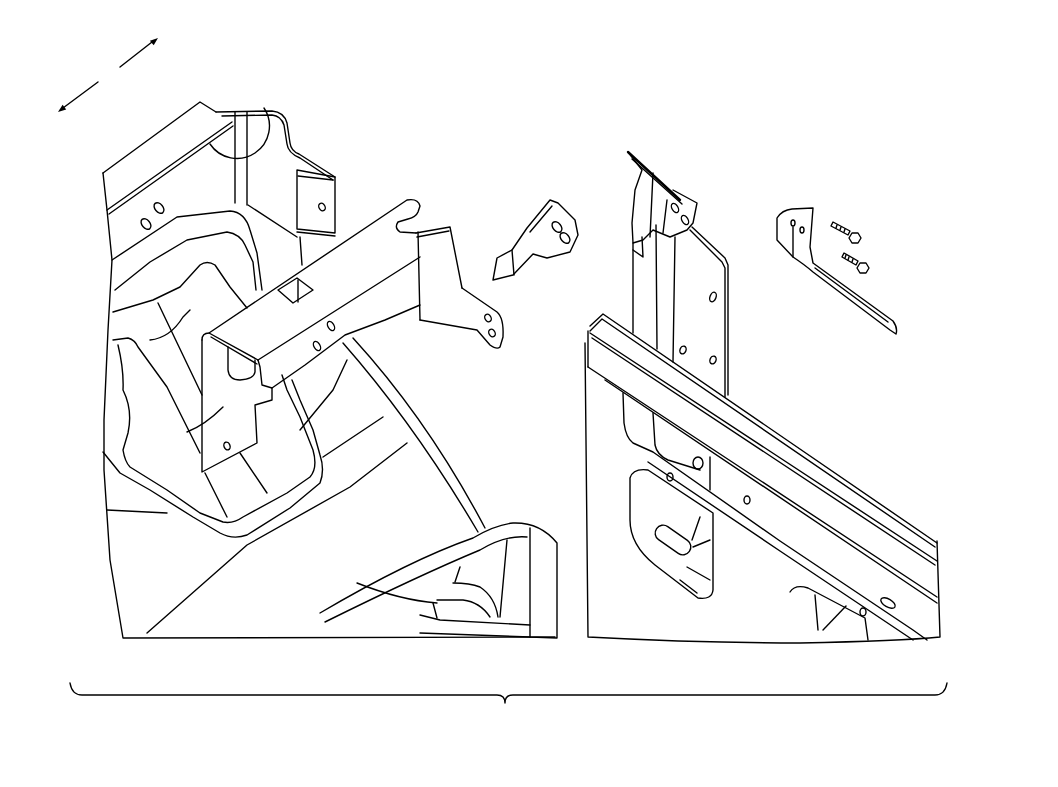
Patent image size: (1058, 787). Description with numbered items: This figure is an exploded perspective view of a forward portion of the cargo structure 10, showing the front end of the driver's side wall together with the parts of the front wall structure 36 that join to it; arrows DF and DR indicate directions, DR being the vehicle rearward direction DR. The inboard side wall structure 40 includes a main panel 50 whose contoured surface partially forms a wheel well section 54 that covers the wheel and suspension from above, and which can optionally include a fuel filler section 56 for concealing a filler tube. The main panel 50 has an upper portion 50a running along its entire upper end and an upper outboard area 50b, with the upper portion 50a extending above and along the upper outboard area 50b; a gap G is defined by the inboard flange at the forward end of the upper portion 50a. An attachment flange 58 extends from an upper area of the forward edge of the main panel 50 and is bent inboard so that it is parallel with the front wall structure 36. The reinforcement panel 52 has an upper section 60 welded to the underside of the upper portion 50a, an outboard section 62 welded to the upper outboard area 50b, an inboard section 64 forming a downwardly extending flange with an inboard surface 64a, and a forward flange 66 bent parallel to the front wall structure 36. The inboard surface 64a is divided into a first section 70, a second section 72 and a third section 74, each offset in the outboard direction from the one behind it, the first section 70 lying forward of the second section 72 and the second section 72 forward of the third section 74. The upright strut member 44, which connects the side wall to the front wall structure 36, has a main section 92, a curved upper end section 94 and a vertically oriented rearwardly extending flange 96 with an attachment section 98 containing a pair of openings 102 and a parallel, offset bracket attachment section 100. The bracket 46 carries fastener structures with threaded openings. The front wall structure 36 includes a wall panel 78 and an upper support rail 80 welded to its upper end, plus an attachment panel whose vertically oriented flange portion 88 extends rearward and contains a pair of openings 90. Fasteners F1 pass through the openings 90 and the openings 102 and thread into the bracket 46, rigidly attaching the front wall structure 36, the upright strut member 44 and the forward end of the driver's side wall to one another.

The cargo structure 10 is at (362, 91).
The forward direction DF is at (130, 56).
The vehicle rearward direction DR is at (85, 90).
The front wall structure 36 is at (815, 452).
The inboard side wall structure 40 is at (122, 157).
The upright strut member 44 is at (652, 158).
The bracket 46 is at (528, 217).
The main panel 50 is at (134, 146).
The upper portion 50a is at (181, 133).
The upper outboard area 50b is at (123, 227).
The gap G is at (263, 135).
The reinforcement panel 52 is at (388, 206).
The wheel well section 54 is at (143, 555).
The fuel filler section 56 is at (150, 340).
The attachment flange 58 is at (320, 190).
The upper section 60 is at (200, 360).
The outboard section 62 is at (187, 432).
The inboard section 64 is at (272, 392).
The inboard surface 64a is at (363, 300).
The forward flange section 66 is at (477, 320).
The first section 70 is at (413, 253).
The second section 72 is at (387, 280).
The third section 74 is at (318, 365).
The wall panel 78 is at (752, 600).
The upper support rail 80 is at (877, 543).
The flange portion 88 is at (790, 210).
The openings 90 is at (797, 205).
The fasteners F1 is at (858, 228).
The main section 92 is at (713, 332).
The curved upper end section 94 is at (663, 177).
The rearwardly extending flange 96 is at (647, 215).
The attachment section 98 is at (680, 200).
The bracket attachment section 100 is at (640, 237).
The openings 102 is at (680, 207).